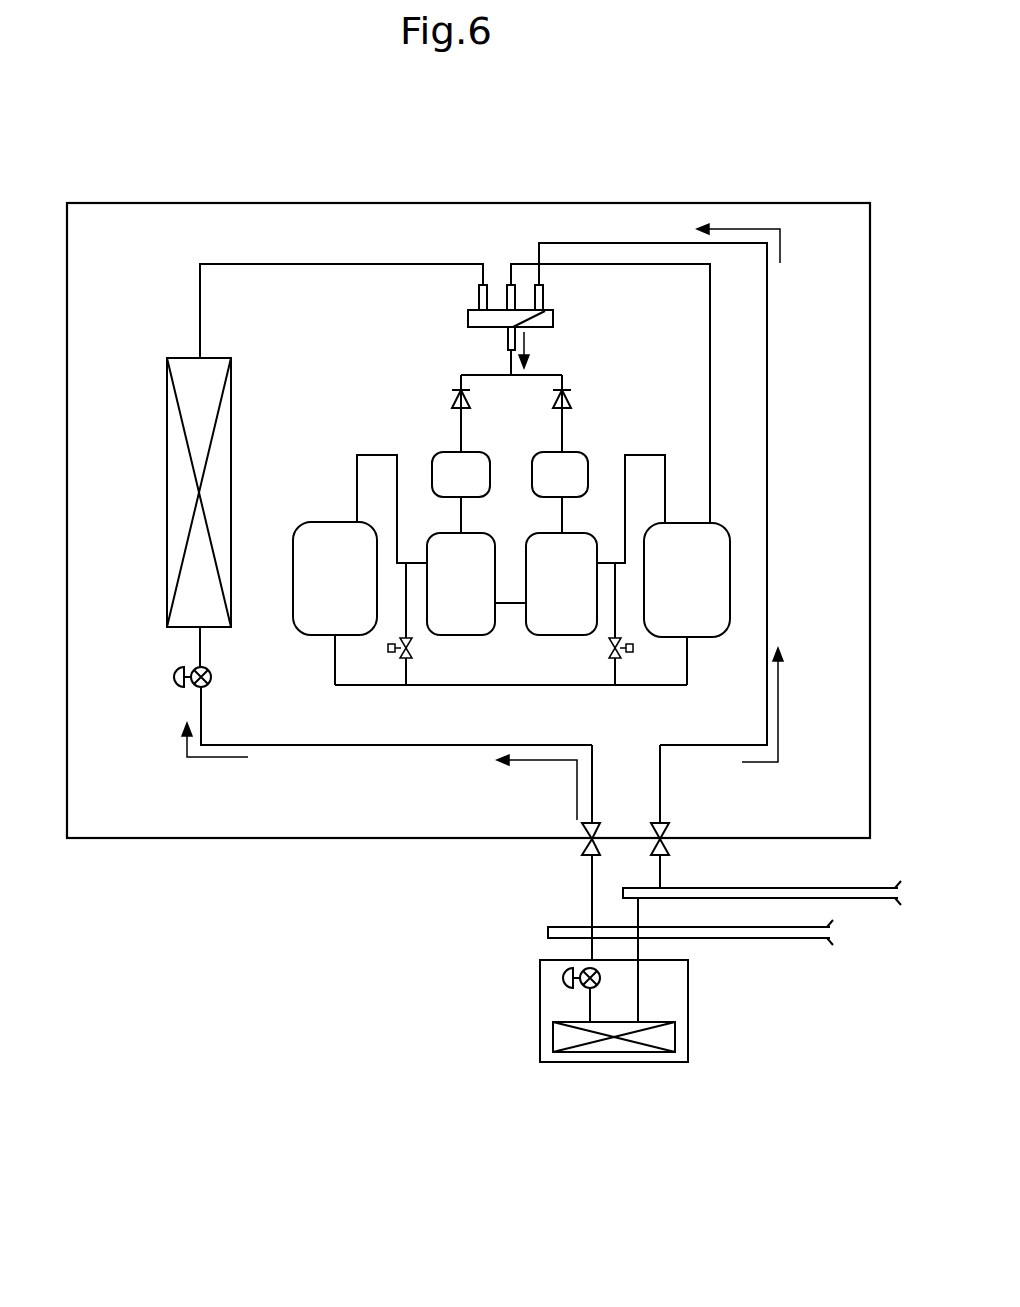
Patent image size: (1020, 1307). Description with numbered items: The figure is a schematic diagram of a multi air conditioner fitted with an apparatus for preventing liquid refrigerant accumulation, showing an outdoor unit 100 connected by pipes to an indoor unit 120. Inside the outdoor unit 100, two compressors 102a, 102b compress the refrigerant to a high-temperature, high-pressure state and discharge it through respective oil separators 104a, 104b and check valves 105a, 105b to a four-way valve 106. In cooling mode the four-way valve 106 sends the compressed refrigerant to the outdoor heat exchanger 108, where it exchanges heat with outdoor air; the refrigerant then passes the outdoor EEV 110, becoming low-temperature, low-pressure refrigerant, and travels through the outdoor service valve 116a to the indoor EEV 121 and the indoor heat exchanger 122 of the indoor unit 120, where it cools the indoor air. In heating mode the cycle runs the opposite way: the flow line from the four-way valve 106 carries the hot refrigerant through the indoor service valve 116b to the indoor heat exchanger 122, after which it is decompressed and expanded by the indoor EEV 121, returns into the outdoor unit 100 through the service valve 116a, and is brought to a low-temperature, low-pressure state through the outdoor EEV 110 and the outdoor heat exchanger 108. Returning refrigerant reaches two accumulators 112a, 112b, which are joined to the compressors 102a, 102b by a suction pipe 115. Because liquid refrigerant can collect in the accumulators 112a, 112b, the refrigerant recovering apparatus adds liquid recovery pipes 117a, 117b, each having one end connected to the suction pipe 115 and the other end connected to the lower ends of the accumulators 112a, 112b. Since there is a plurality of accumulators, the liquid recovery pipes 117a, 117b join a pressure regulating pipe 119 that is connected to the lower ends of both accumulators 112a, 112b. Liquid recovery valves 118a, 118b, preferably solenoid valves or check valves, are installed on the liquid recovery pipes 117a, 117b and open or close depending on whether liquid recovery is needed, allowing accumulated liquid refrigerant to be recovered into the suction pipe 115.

The outdoor unit 100 is at (553, 203).
The compressor 102a is at (460, 627).
The compressor 102b is at (560, 627).
The oil separator 104a is at (442, 453).
The oil separator 104b is at (580, 453).
The check valve 105a is at (452, 403).
The check valve 105b is at (572, 401).
The four-way valve 106 is at (553, 318).
The outdoor heat exchanger 108 is at (185, 493).
The outdoor EEV 110 is at (174, 679).
The accumulator 112a is at (327, 526).
The accumulator 112b is at (714, 594).
The suction pipe 115 is at (361, 450).
The outdoor service valve 116a is at (582, 846).
The indoor service valve 116b is at (666, 847).
The liquid recovery pipe 117a is at (402, 668).
The liquid recovery pipe 117b is at (618, 672).
The liquid recovery valve 118a is at (410, 662).
The liquid recovery valve 118b is at (612, 665).
The pressure regulating pipe 119 is at (527, 687).
The indoor unit 120 is at (540, 1082).
The indoor EEV 121 is at (566, 980).
The indoor heat exchanger 122 is at (616, 1054).